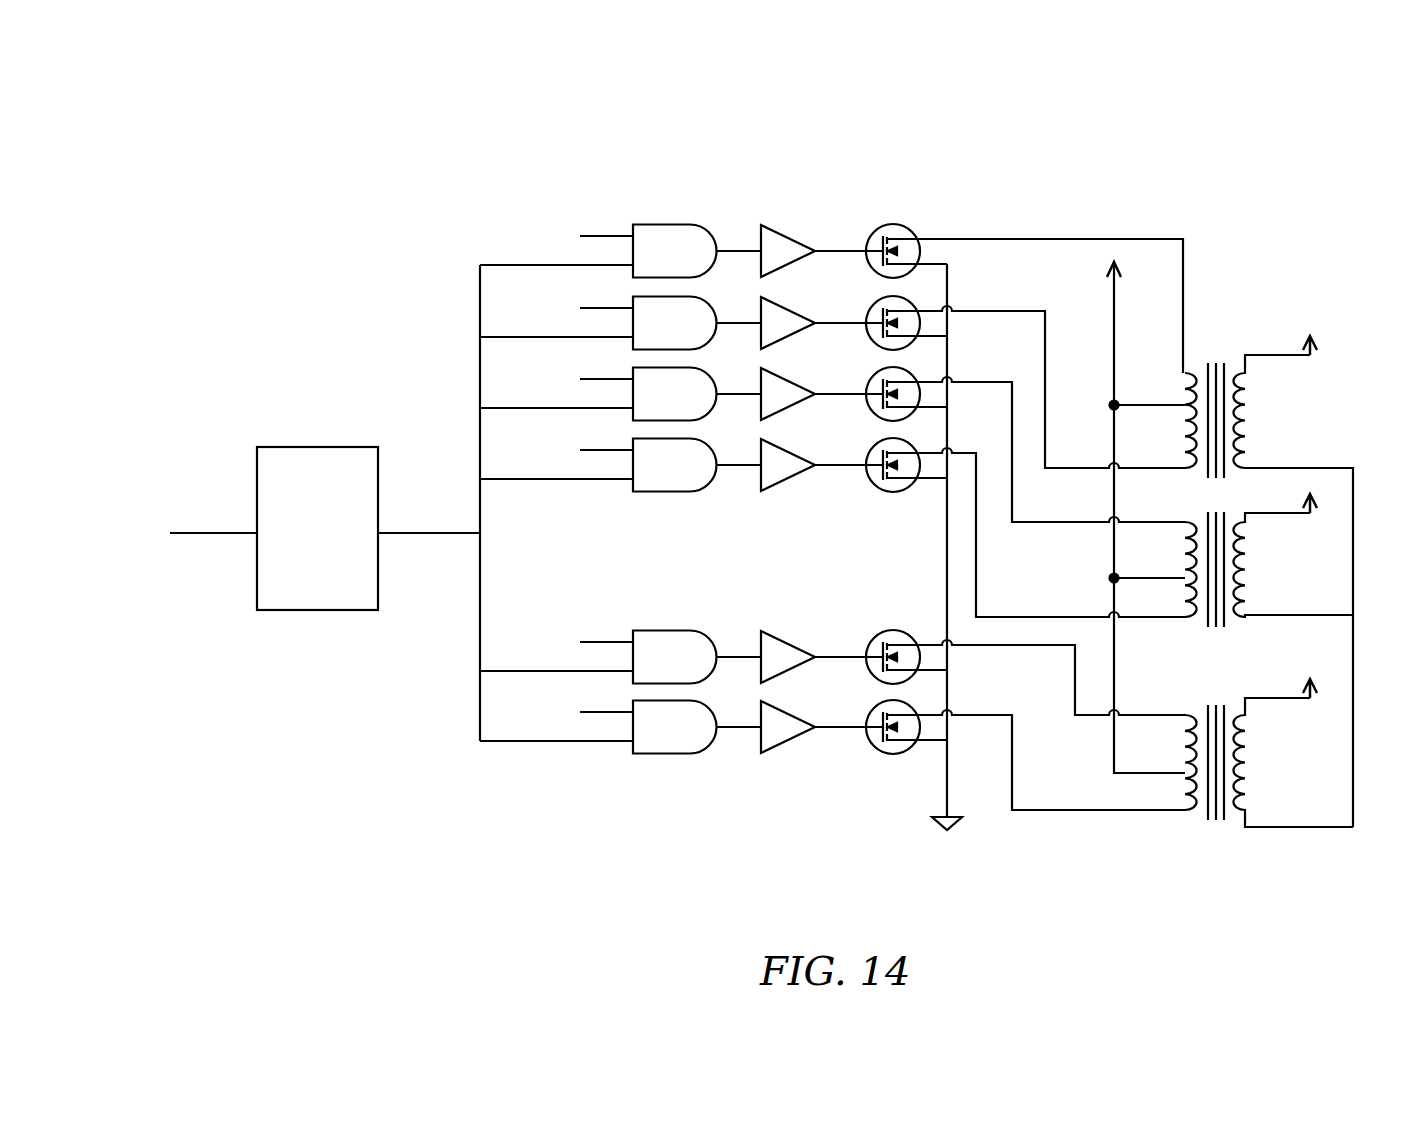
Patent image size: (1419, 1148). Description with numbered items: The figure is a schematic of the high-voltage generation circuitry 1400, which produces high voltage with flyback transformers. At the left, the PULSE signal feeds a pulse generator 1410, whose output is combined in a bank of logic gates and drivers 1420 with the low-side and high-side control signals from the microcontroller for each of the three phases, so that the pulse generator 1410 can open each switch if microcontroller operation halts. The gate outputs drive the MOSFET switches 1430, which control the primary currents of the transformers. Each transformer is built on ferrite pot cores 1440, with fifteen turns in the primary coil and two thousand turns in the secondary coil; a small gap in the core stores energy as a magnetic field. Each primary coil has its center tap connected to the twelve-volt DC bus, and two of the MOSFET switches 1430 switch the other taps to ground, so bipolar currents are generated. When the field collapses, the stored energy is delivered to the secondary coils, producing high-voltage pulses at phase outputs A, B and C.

The high-voltage generation circuitry 1400 is at (247, 168).
The pulse generator 1410 is at (331, 442).
The AND gates and buffer drivers 1420 is at (813, 212).
The MOSFET switches 1430 is at (897, 200).
The ferrite pot cores 1440 is at (1225, 323).